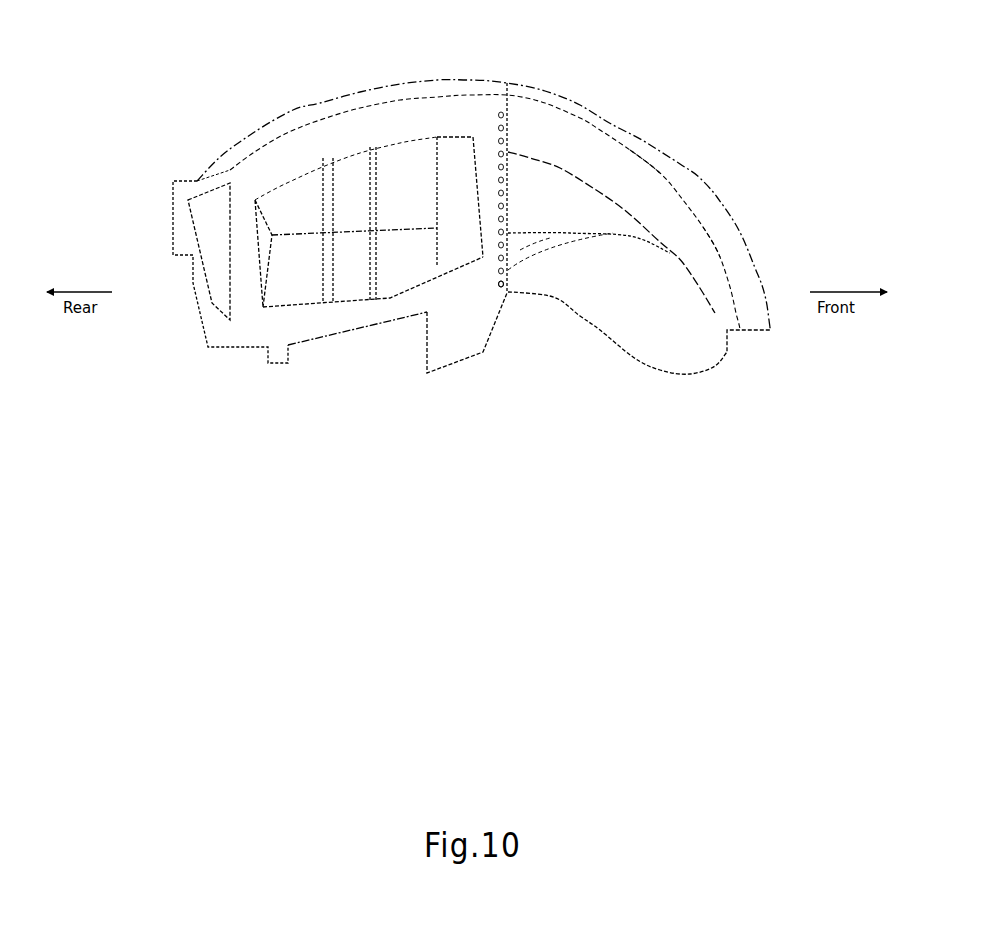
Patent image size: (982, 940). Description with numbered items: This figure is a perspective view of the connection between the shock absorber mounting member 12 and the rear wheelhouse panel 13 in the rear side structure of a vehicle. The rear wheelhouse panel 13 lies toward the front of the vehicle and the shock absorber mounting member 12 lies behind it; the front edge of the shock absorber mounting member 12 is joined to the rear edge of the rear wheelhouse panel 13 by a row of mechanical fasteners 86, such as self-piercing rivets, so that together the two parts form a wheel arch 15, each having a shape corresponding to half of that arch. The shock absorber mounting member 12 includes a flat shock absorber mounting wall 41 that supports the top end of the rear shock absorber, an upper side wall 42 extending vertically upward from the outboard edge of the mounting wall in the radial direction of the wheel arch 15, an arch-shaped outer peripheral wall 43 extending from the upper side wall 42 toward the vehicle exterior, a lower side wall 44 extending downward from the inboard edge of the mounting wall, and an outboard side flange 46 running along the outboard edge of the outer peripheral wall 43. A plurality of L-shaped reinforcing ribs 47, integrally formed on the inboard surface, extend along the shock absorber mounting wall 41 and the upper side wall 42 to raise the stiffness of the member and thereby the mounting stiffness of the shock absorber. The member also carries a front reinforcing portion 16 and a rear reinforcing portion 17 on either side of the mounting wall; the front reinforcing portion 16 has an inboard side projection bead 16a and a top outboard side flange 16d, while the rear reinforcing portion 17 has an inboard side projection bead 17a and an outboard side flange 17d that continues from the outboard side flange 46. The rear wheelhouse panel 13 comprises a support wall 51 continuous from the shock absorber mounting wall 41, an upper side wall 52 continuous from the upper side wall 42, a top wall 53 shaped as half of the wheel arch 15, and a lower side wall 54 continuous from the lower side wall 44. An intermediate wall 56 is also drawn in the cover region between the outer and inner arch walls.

The shock absorber mounting member 12 is at (265, 100).
The rear wheelhouse panel 13 is at (700, 167).
The wheel arch 15 is at (510, 70).
The front reinforcing portion 16 is at (467, 232).
The inboard side projection bead 16a is at (460, 227).
The outboard side flange 16d is at (443, 93).
The rear reinforcing portion 17 is at (209, 232).
The inboard side projection bead 17a is at (243, 263).
The outboard side flange 17d is at (217, 163).
The shock absorber mounting wall 41 is at (369, 234).
The upper side wall 42 is at (352, 172).
The outer peripheral wall 43 is at (398, 120).
The lower side wall 44 is at (308, 330).
The outboard side flange 46 is at (319, 109).
The reinforcing ribs 47 is at (350, 290).
The support wall 51 is at (527, 247).
The upper side wall 52 is at (563, 193).
The top wall 53 is at (693, 235).
The lower side wall 54 is at (660, 330).
The intermediate wall 56 is at (647, 157).
The mechanical fasteners 86 is at (503, 275).